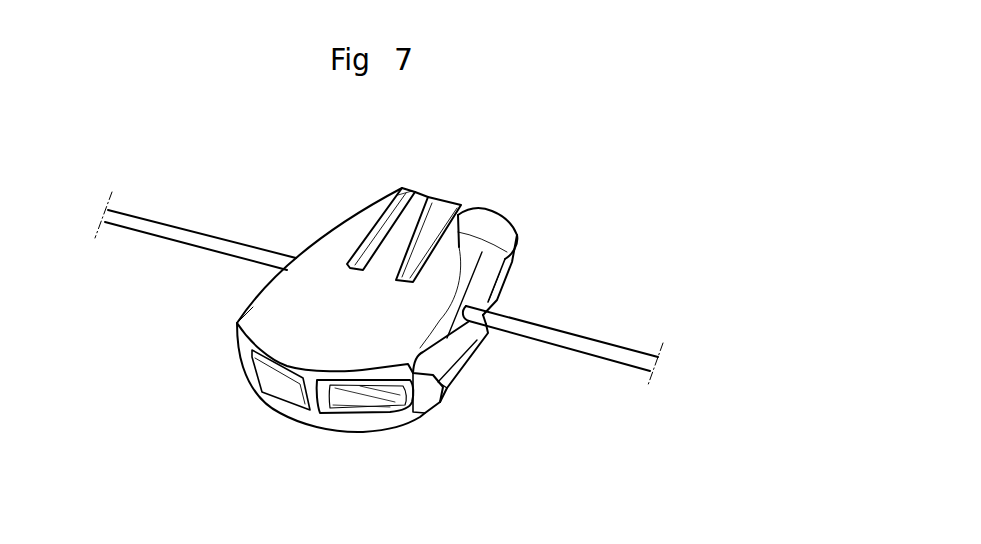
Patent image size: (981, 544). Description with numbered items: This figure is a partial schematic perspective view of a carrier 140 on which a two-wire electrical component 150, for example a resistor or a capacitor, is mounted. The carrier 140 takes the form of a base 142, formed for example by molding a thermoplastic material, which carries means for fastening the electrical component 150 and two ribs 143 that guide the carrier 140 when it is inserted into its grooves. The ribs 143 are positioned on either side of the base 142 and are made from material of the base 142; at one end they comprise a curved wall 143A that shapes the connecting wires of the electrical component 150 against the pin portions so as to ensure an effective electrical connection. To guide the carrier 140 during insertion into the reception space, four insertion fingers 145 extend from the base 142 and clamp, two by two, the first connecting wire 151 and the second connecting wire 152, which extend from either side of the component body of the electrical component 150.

The carrier 140 is at (297, 217).
The base 142 is at (313, 410).
The ribs 143 is at (463, 363).
The curved wall 143A is at (493, 337).
The insertion fingers 145 is at (394, 190).
The electrical component 150 is at (597, 312).
The first connecting wire 151 is at (603, 352).
The second connecting wire 152 is at (136, 223).